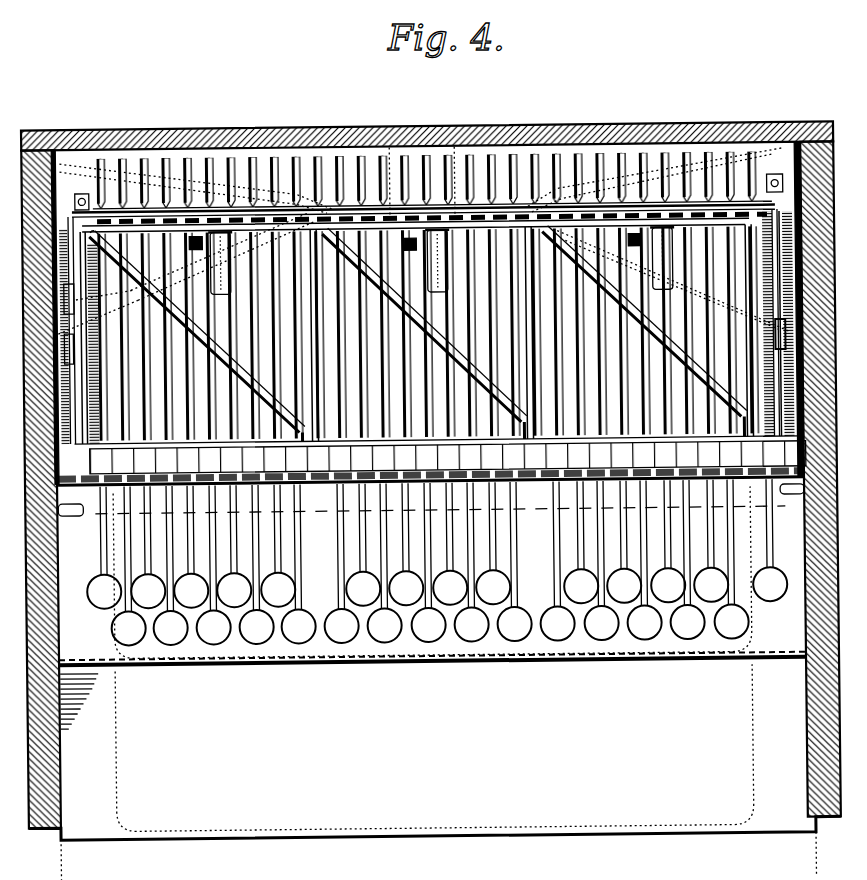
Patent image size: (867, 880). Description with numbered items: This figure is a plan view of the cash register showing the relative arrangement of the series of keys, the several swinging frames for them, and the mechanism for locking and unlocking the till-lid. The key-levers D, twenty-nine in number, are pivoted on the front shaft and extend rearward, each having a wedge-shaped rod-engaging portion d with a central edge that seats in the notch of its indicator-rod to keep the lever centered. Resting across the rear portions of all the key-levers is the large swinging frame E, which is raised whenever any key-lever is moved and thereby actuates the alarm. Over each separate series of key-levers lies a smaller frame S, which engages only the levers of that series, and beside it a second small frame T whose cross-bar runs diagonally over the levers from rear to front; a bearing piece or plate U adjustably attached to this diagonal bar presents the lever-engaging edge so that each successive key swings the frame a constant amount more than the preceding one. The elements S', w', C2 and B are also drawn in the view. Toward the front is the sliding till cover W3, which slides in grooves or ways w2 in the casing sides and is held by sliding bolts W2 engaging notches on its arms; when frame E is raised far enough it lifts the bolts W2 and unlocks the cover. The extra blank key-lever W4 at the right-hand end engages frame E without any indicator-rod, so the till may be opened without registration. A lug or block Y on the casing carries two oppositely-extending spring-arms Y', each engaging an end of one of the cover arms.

The wedge-shaped rod-engaging portion d is at (432, 174).
The key-levers D is at (431, 396).
The swinging frame E is at (300, 206).
The swinging frame S is at (432, 196).
The bearing piece or plate U is at (205, 375).
The small frame T is at (228, 360).
The slide block S' is at (445, 261).
The lug or block Y is at (449, 189).
The spring-arms Y' is at (422, 218).
The extra key-lever W4 is at (426, 184).
The left guide column w' is at (100, 318).
The grooves or ways w2 is at (790, 370).
The clamp C2 is at (790, 336).
The bracket B is at (790, 312).
The sliding bolt W2 is at (777, 540).
The cover W3 is at (407, 748).